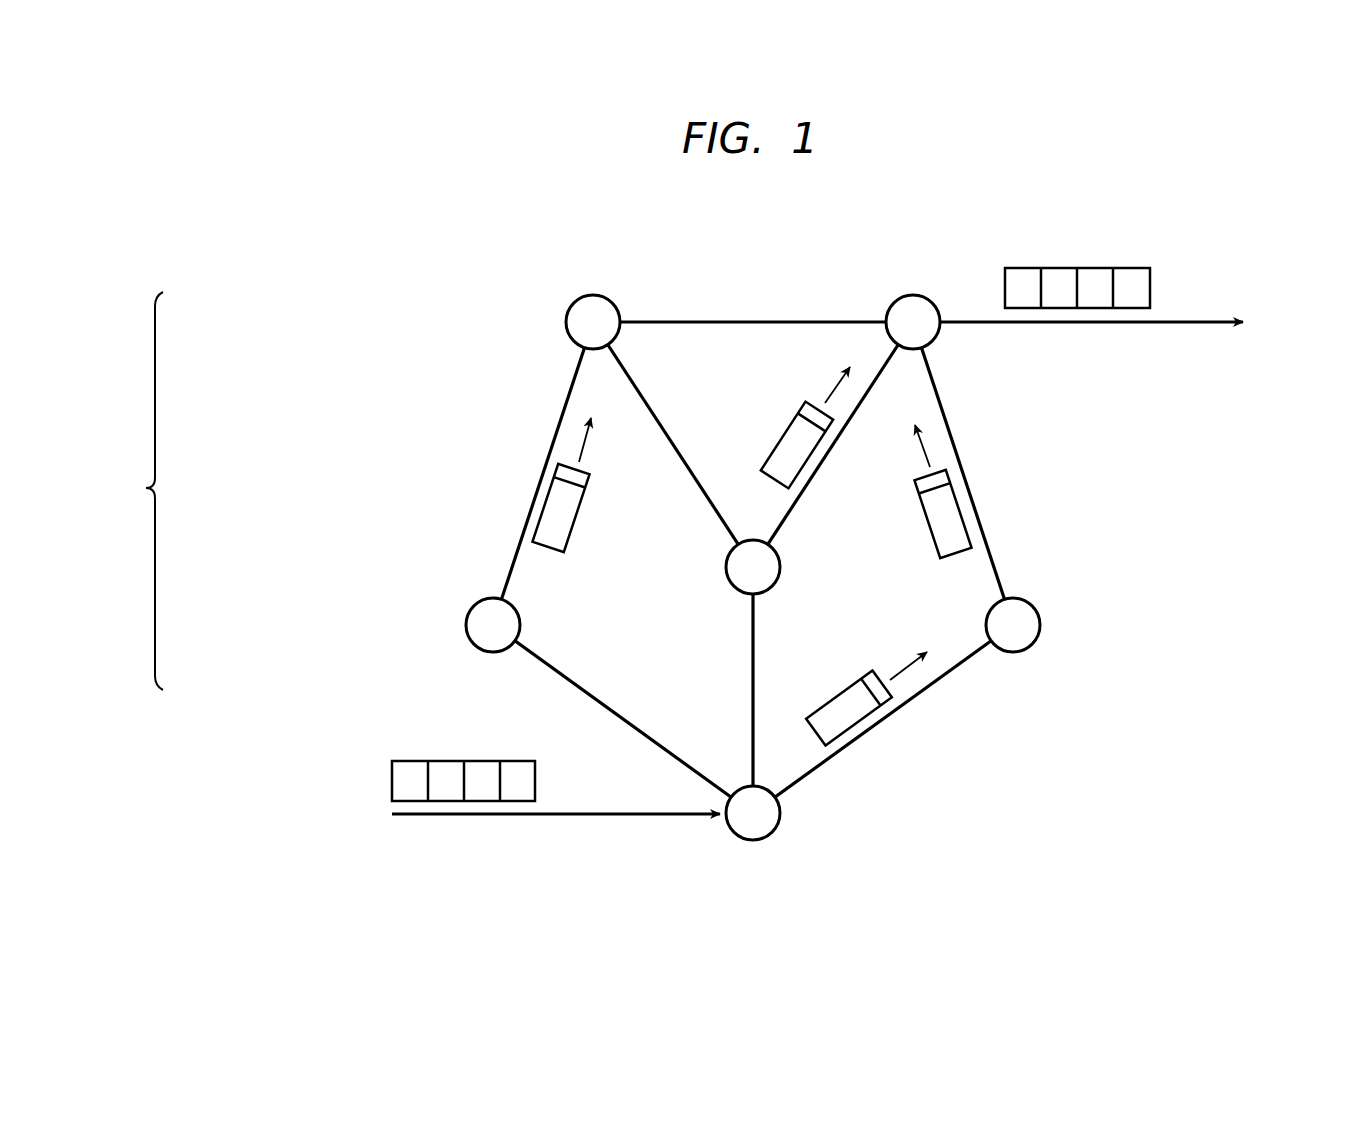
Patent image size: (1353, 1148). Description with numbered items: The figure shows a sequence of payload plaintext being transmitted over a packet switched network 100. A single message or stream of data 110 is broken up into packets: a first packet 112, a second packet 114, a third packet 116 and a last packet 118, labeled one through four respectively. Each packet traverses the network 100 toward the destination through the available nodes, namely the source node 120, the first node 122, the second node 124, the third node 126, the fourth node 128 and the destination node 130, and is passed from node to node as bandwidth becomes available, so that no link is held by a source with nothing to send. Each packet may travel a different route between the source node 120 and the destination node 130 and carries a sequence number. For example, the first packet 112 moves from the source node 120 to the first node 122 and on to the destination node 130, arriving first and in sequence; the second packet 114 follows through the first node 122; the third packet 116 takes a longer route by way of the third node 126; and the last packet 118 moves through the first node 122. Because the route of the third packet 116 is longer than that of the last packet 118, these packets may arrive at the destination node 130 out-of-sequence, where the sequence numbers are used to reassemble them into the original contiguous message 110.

The packet switched network 100 is at (146, 488).
The message 110 is at (350, 762).
The first packet 112 is at (790, 432).
The second packet 114 is at (924, 512).
The third packet 116 is at (582, 527).
The last packet 118 is at (840, 692).
The source node 120 is at (748, 843).
The first node 122 is at (1013, 653).
The second node 124 is at (727, 574).
The third node 126 is at (481, 600).
The fourth node 128 is at (596, 296).
The destination node 130 is at (916, 296).